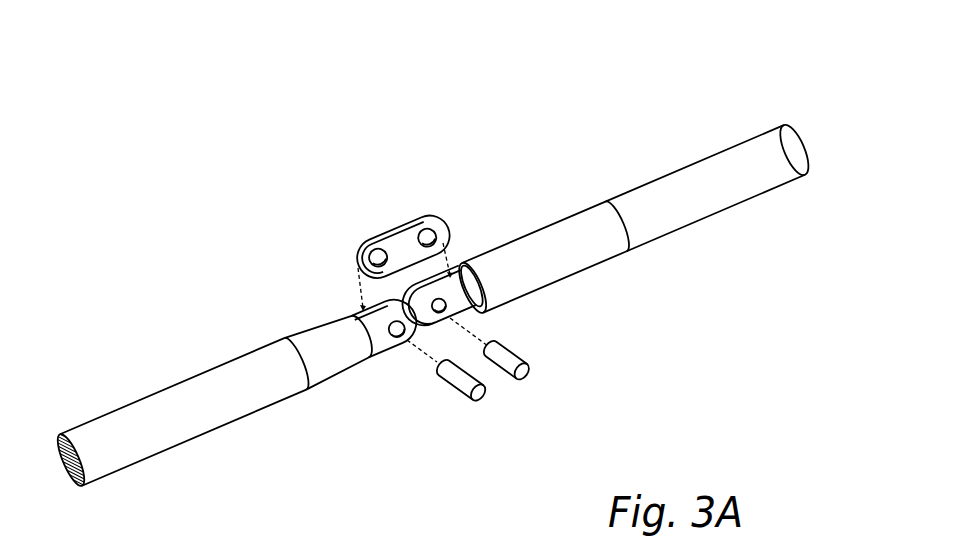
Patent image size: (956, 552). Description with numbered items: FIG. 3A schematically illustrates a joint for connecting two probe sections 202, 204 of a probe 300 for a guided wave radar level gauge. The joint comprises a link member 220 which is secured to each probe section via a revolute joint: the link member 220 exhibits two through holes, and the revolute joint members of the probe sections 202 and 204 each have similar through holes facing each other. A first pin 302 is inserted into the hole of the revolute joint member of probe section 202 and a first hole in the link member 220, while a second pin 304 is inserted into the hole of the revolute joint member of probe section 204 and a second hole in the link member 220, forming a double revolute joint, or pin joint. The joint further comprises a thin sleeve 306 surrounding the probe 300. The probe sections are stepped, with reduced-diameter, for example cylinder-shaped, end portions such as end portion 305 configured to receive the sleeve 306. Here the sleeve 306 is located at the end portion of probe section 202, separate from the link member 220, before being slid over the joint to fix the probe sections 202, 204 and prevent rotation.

The probe 300 is at (767, 80).
The probe section 202 is at (208, 388).
The probe section 204 is at (604, 205).
The link member 220 is at (405, 222).
The first pin 302 is at (461, 386).
The second pin 304 is at (520, 352).
The end portion 305 is at (341, 309).
The sleeve 306 is at (587, 247).